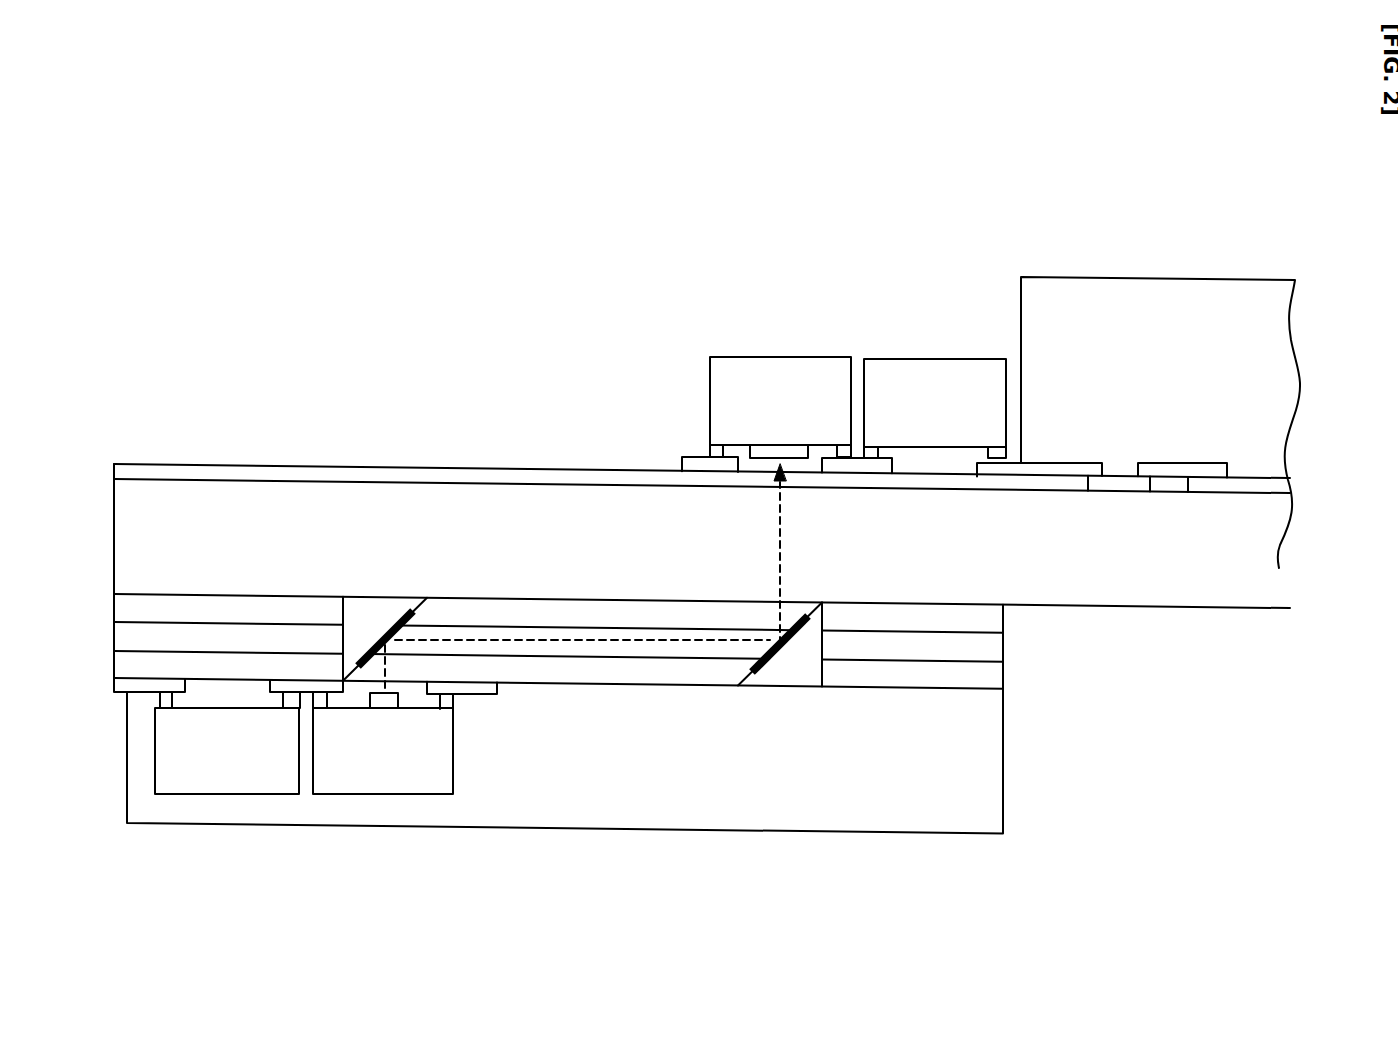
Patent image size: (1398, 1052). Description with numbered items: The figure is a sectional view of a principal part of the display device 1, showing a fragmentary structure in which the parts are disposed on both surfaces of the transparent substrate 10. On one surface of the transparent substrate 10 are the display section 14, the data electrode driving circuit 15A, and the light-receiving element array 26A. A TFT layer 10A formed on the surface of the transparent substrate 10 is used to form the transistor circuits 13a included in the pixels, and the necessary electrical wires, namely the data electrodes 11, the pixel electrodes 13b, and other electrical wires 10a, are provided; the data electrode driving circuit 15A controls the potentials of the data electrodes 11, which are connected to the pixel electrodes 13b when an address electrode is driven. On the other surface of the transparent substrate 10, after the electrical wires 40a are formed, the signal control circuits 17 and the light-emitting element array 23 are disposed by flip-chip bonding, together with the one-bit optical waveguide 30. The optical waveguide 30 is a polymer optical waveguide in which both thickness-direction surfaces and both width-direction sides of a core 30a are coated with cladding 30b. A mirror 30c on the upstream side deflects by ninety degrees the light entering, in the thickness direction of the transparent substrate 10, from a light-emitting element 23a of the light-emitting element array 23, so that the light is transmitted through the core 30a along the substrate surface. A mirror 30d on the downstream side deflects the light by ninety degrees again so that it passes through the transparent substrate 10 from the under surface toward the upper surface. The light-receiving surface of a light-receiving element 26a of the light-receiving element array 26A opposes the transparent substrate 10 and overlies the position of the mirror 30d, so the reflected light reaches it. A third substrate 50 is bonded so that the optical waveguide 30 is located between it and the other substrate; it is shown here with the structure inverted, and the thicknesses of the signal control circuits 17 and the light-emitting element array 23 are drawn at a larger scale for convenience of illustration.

The display device 1 is at (572, 338).
The transparent substrate 10 is at (135, 535).
The TFT layer 10A is at (163, 474).
The electrical wires 10a is at (695, 456).
The data electrodes 11 is at (1035, 463).
The transistor circuits 13a is at (1125, 493).
The pixel electrodes 13b is at (1188, 493).
The display section 14 is at (1259, 333).
The data electrode driving circuit 15A is at (953, 387).
The signal control circuits 17 is at (228, 752).
The light-emitting element array 23 is at (430, 757).
The light-emitting element 23a is at (378, 700).
The light-receiving element array 26A is at (797, 383).
The light-receiving element 26a is at (765, 450).
The optical waveguide 30 is at (668, 650).
The core 30a is at (617, 648).
The cladding 30b is at (567, 612).
The mirror 30c is at (384, 636).
The mirror 30d is at (785, 648).
The electrical wires 40a is at (467, 688).
The third substrate 50 is at (973, 737).